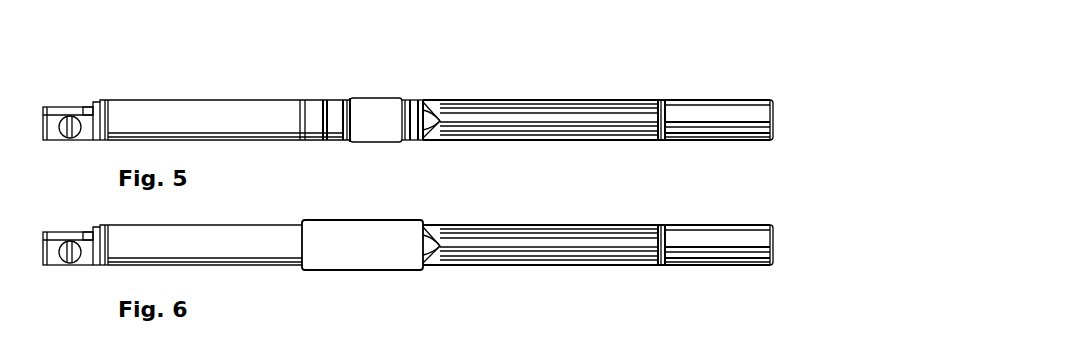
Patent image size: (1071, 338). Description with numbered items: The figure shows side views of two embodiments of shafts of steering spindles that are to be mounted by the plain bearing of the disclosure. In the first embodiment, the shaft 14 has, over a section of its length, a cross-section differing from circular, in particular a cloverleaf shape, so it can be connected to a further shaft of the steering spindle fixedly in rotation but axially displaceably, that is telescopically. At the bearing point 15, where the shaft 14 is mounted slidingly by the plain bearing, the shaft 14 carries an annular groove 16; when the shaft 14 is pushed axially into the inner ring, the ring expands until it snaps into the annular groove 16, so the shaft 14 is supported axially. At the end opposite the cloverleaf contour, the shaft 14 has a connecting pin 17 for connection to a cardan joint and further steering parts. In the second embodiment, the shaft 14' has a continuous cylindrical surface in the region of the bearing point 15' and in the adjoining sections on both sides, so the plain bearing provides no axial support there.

In FIG. 5, the shaft 14 is at (598, 88).
In FIG. 6, the shaft 14' is at (598, 210).
In FIG. 5, the bearing point 15 is at (383, 91).
In FIG. 6, the bearing point 15' is at (362, 270).
In FIG. 5, the annular groove 16 is at (330, 98).
In FIG. 5, the connecting pin 17 is at (52, 120).
In FIG. 6, the connecting pin 17 is at (53, 248).